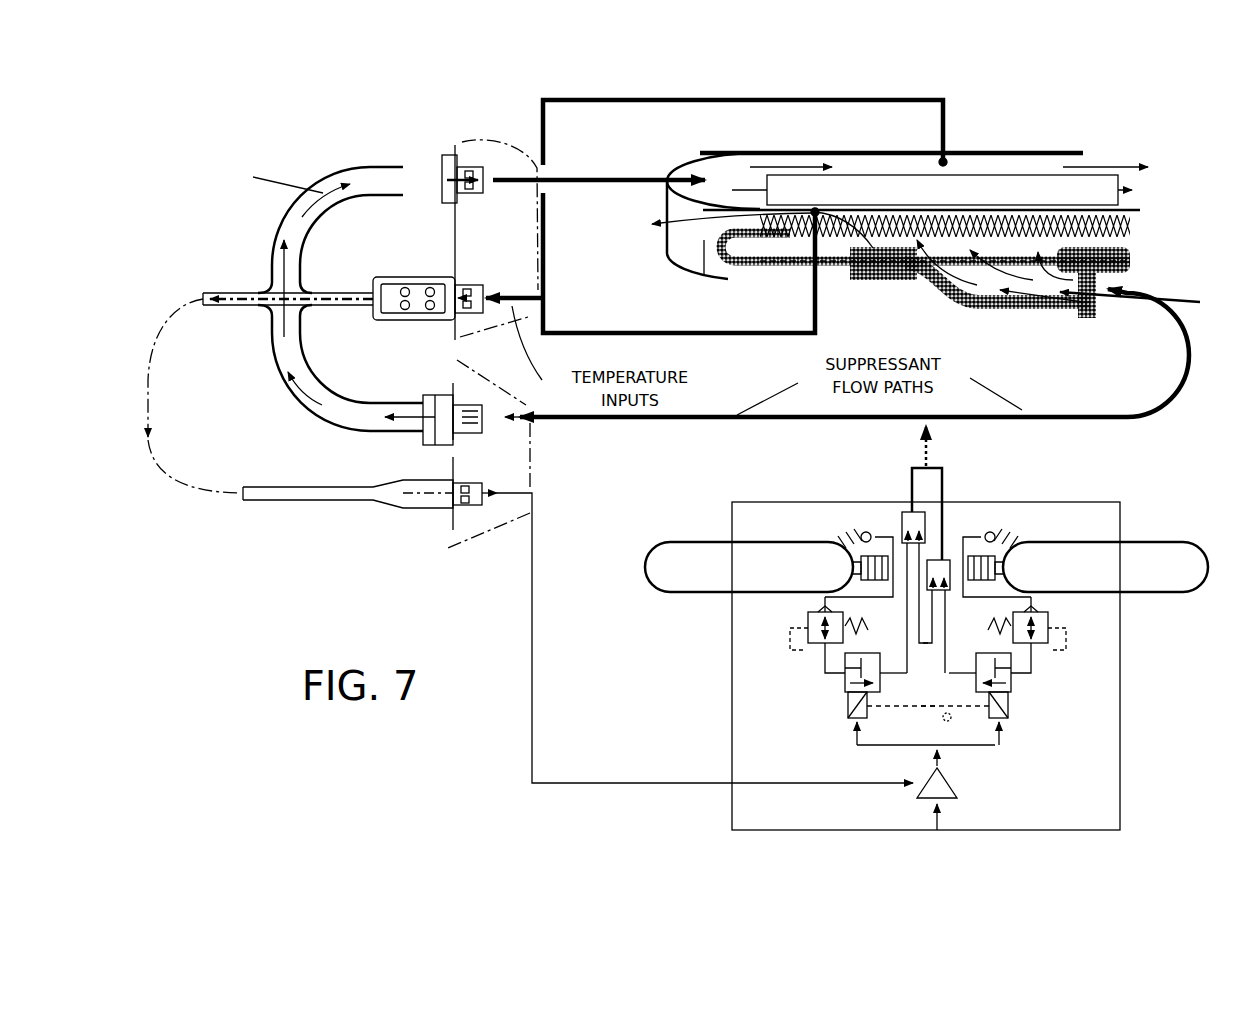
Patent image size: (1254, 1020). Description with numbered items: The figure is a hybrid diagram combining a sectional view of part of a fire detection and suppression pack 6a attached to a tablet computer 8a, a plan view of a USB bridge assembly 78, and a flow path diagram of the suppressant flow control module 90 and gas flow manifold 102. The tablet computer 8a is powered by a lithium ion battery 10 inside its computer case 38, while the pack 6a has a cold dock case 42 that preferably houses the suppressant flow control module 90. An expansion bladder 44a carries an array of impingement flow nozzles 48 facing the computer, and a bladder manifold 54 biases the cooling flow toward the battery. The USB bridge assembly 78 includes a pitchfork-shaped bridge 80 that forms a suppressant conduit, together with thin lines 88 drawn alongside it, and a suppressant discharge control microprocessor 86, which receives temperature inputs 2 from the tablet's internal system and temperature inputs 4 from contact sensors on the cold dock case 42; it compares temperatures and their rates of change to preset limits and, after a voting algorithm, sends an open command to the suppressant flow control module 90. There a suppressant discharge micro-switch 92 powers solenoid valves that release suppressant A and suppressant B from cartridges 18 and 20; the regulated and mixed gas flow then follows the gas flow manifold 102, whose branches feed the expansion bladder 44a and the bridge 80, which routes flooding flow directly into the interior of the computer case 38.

The temperature inputs 2 is at (775, 100).
The temperature inputs 4 is at (818, 282).
The fire detection and suppression pack 6a is at (900, 282).
The tablet computer 8a is at (966, 147).
The lithium ion battery 10 is at (1010, 175).
The cartridge 18 is at (712, 540).
The cartridge 20 is at (1160, 540).
The computer case 38 is at (698, 162).
The cold dock case 42 is at (667, 258).
The expansion bladder 44a is at (722, 262).
The impingement flow nozzles 48 is at (1120, 228).
The bladder manifold 54 is at (1048, 313).
The USB bridge assembly 78 is at (307, 145).
The pitchfork-shaped bridge 80 is at (270, 223).
The suppressant discharge control microprocessor 86 is at (418, 283).
The sensor tubes 88 is at (227, 310).
The suppressant flow control module 90 is at (1080, 490).
The suppressant discharge micro-switch 92 is at (948, 788).
The gas flow manifold 102 is at (910, 470).